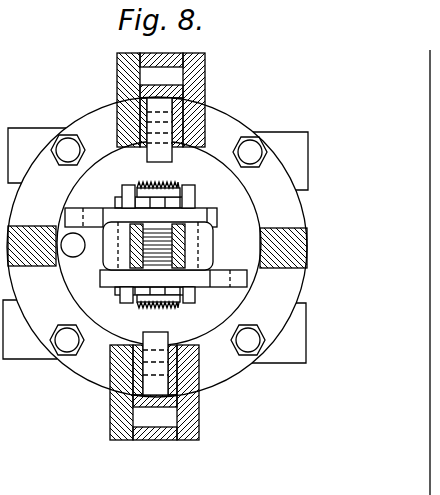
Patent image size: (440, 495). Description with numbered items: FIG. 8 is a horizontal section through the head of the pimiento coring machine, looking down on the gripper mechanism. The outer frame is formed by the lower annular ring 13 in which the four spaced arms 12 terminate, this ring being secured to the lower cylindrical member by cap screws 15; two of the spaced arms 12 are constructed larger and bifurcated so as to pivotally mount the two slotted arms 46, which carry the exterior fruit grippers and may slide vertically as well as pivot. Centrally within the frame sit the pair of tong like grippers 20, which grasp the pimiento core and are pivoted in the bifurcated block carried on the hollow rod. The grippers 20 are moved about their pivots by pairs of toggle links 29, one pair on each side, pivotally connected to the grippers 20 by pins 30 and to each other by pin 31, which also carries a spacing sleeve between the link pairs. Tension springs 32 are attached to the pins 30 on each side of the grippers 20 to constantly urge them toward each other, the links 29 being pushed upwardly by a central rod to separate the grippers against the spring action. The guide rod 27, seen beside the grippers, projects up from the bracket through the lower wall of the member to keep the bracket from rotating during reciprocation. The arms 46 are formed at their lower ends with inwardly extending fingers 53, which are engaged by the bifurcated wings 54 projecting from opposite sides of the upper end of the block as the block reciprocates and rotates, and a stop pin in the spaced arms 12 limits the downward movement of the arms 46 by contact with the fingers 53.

The spaced arms 12 is at (206, 83).
The lower annular ring 13 is at (236, 114).
The cap screws 15 is at (70, 137).
The tong like grippers 20 is at (140, 250).
The guide rod 27 is at (70, 256).
The toggle links 29 is at (120, 208).
The pins 30 is at (128, 184).
The pin 31 is at (158, 312).
The tension springs 32 is at (158, 181).
The arms 46 is at (176, 56).
The fingers 53 is at (163, 155).
The bifurcated wings 54 is at (77, 208).